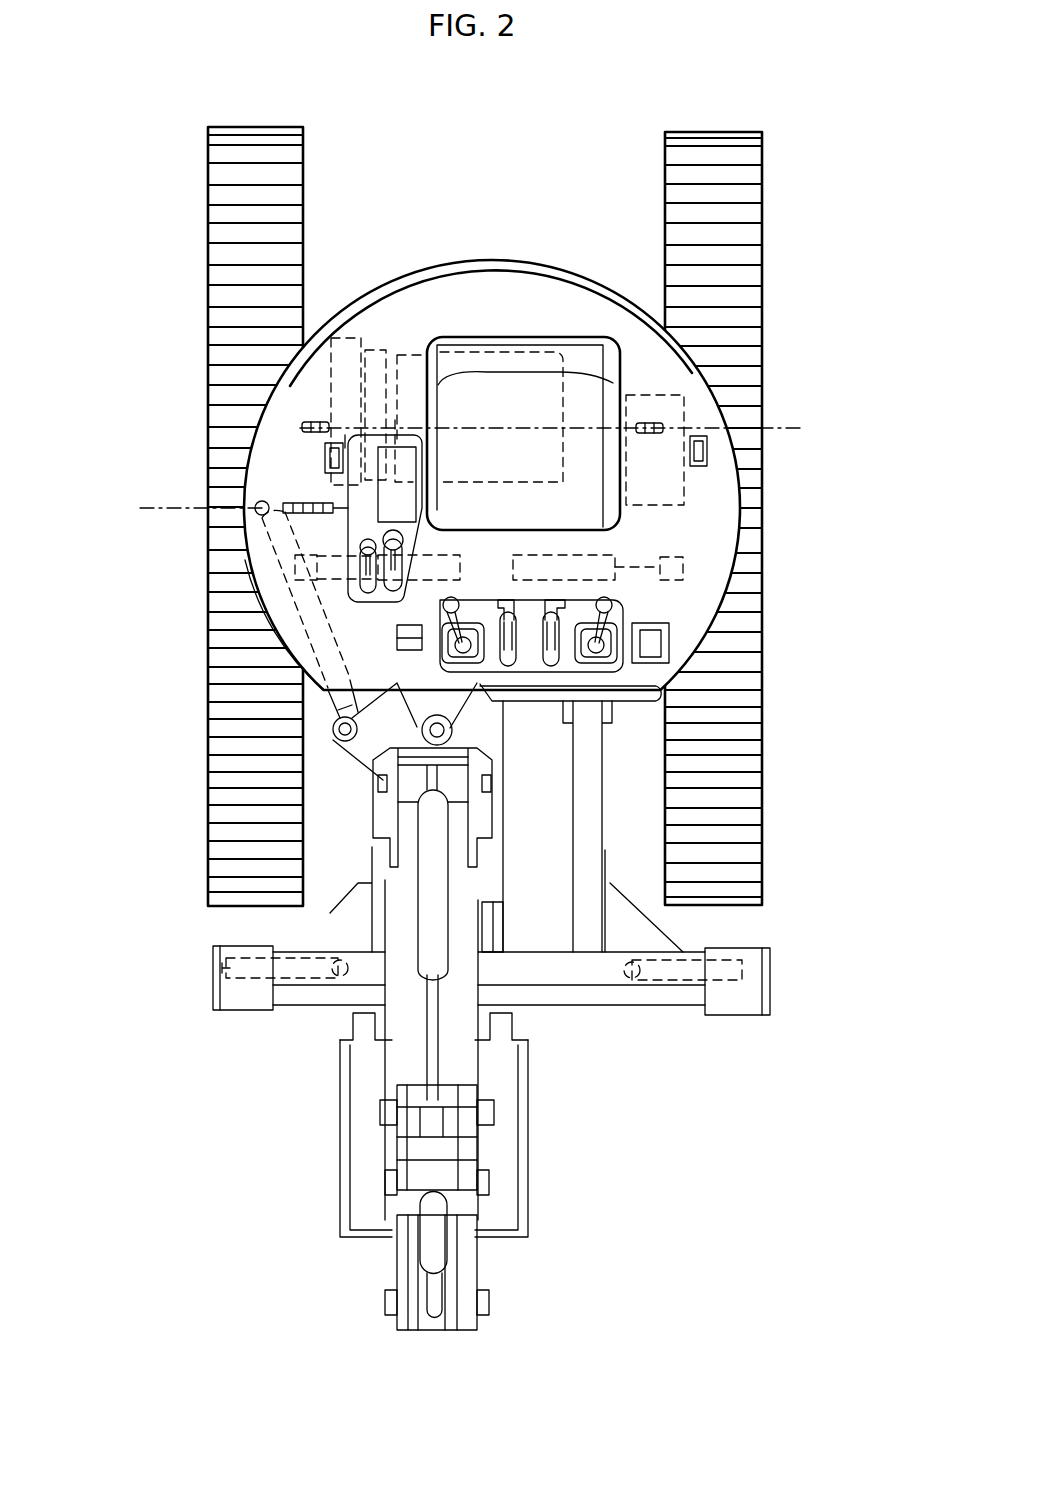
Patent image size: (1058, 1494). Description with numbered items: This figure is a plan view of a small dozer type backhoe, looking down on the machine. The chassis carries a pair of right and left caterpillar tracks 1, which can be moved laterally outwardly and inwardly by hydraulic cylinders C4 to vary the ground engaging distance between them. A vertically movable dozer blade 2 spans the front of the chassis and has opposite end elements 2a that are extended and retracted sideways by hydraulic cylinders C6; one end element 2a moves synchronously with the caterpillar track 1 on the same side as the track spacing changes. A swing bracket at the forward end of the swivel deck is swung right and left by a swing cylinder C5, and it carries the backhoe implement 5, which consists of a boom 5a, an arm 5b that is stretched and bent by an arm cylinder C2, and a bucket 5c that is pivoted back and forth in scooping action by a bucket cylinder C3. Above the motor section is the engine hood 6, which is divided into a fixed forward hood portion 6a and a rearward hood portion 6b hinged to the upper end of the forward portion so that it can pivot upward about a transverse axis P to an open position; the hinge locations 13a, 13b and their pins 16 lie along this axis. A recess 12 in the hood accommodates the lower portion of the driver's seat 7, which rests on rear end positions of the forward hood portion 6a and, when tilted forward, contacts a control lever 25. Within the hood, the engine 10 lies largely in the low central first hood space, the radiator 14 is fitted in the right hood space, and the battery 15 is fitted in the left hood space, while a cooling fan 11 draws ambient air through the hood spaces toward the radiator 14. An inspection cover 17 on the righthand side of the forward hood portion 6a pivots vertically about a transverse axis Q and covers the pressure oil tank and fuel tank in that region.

The caterpillar tracks 1 is at (303, 130).
The dozer blade 2 is at (597, 1005).
The end elements 2a is at (243, 1010).
The backhoe implement 5 is at (318, 1178).
The boom 5a is at (460, 883).
The arm 5b is at (460, 1261).
The bucket 5c is at (528, 1204).
The engine hood 6 is at (561, 255).
The forward hood portion 6a is at (722, 510).
The rearward hood portion 6b is at (497, 280).
The driver's seat 7 is at (600, 521).
The engine 10 is at (543, 483).
The cooling fan 11 is at (376, 350).
The recess 12 is at (600, 345).
The left hinge 13a is at (278, 447).
The right hinge 13b is at (703, 409).
The radiator 14 is at (344, 338).
The battery 15 is at (688, 501).
The hinge pin 16 is at (300, 425).
The inspection cover 17 is at (275, 633).
The control lever 25 is at (455, 606).
The arm cylinder C2 is at (430, 922).
The bucket cylinder C3 is at (432, 1253).
The hydraulic cylinders C4 is at (440, 553).
The swing cylinder C5 is at (278, 608).
The hydraulic cylinders C6 is at (305, 985).
The transverse axis P is at (560, 431).
The transverse axis Q is at (192, 509).